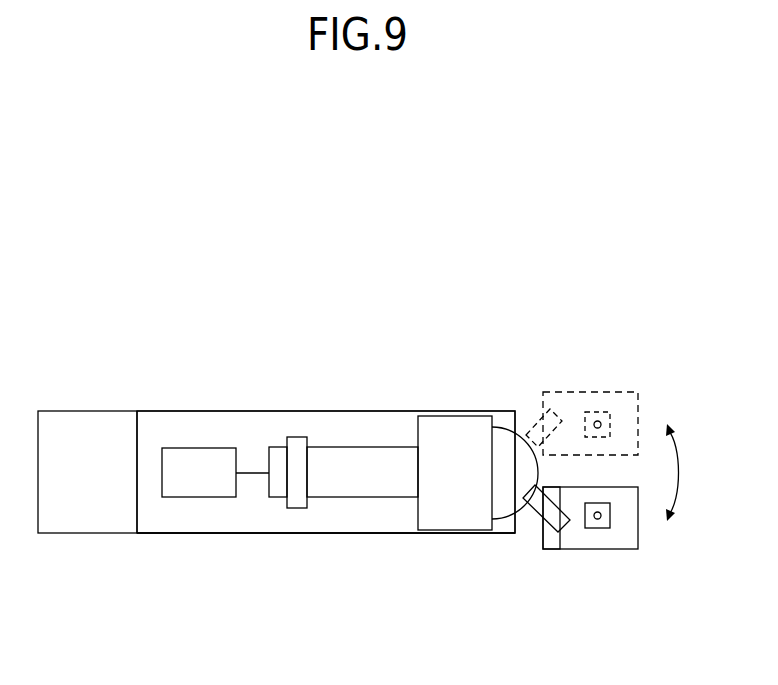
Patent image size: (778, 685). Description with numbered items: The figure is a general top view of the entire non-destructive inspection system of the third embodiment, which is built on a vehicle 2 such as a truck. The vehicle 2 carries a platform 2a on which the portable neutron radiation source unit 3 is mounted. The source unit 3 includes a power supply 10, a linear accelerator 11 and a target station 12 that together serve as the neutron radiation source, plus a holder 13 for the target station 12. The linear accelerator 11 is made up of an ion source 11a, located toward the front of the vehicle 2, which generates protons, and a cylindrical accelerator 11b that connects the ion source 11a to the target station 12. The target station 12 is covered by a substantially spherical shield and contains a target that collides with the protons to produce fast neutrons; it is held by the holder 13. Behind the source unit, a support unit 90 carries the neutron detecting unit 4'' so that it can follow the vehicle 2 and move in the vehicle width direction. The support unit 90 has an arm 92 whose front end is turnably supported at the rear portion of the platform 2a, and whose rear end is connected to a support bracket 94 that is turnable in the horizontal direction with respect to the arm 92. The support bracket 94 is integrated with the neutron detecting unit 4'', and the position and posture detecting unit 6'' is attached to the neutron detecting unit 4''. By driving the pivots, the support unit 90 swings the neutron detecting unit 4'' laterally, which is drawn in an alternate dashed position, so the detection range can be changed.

The vehicle 2 is at (73, 382).
The portable neutron radiation source unit 3 is at (236, 375).
The platform 2a is at (372, 535).
The power supply 10 is at (200, 497).
The linear accelerator 11 is at (352, 419).
The ion source 11a is at (300, 437).
The accelerator 11b is at (340, 447).
The holder 13 is at (441, 416).
The target station 12 is at (515, 432).
The support unit 90 is at (524, 520).
The arm 92 is at (525, 505).
The support bracket 94 is at (550, 550).
The neutron detecting unit 4'' is at (590, 502).
The position and posture detecting unit 6'' is at (635, 542).